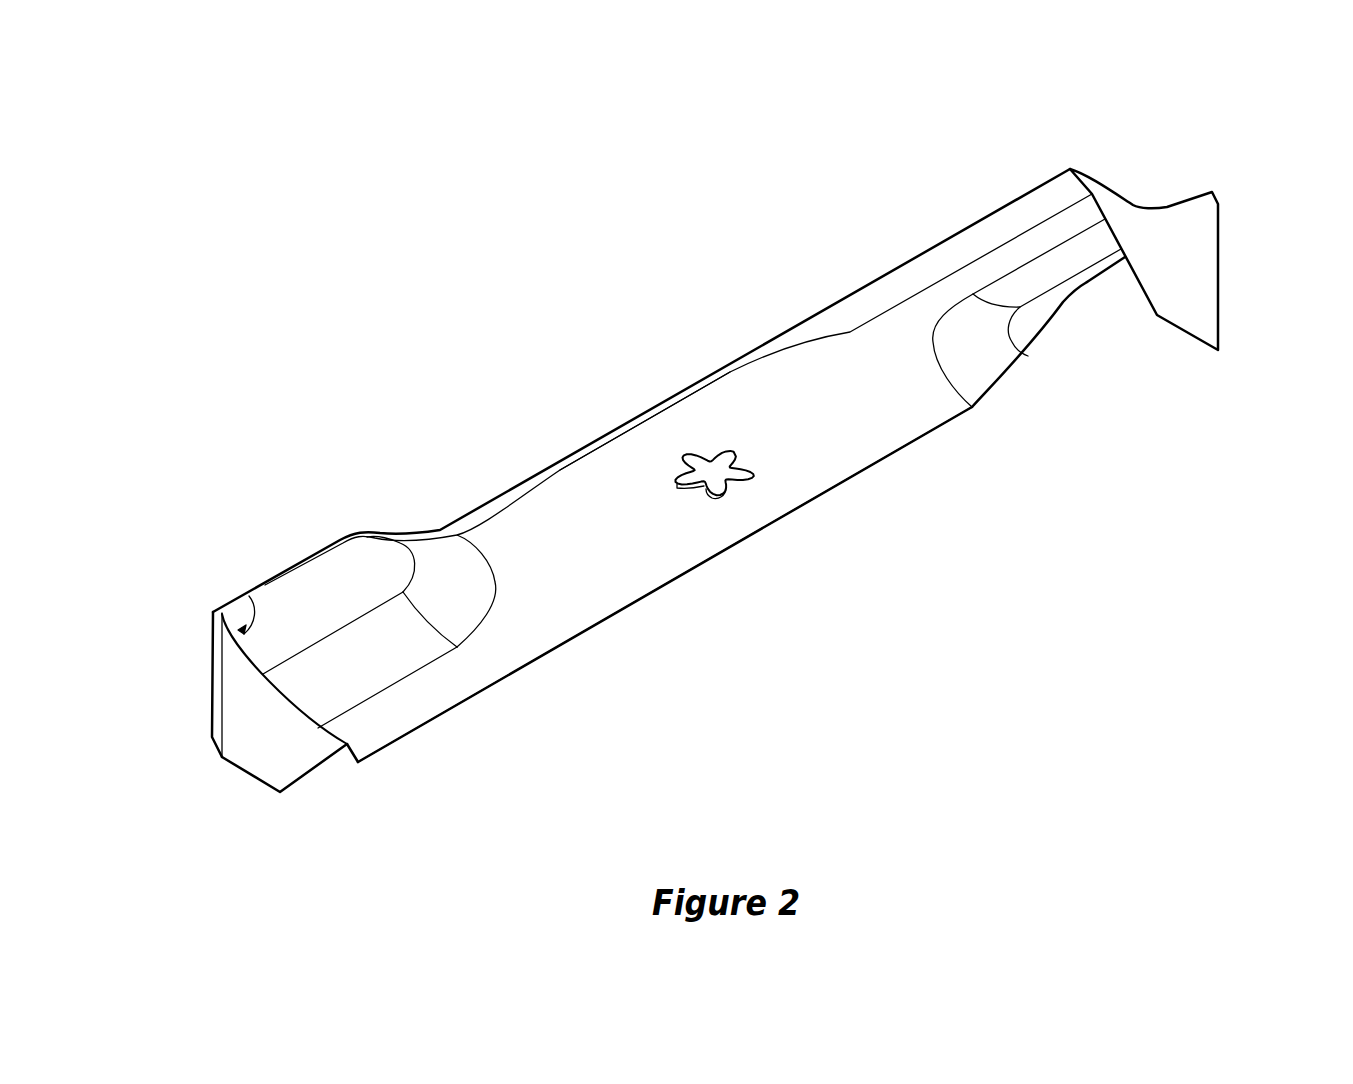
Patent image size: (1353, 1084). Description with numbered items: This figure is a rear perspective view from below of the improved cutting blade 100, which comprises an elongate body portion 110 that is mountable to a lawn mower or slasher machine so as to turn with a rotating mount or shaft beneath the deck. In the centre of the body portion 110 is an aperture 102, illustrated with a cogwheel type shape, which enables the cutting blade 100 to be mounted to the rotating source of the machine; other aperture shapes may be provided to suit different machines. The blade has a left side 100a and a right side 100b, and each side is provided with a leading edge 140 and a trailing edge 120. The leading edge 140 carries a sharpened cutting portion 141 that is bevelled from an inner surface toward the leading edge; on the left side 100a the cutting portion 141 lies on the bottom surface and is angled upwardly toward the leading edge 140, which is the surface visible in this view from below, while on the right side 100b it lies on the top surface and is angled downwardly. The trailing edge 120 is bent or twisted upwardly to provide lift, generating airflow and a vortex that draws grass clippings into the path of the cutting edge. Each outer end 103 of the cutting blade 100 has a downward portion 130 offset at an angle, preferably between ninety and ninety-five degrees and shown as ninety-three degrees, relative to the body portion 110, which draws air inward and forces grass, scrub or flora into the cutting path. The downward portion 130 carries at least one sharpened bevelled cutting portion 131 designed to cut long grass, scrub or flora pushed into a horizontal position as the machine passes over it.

The cutting blade 100 is at (703, 469).
The left side of the cutting blade 100a is at (893, 408).
The right side of the cutting blade 100b is at (573, 604).
The aperture 102 is at (693, 447).
The outer ends 103 is at (347, 757).
The body portion 110 is at (758, 397).
The trailing edge 120 is at (267, 580).
The downward portion 130 is at (262, 748).
The cutting portion of the downward portion 131 is at (217, 688).
The leading edge 140 is at (443, 713).
The cutting portion 141 is at (965, 253).